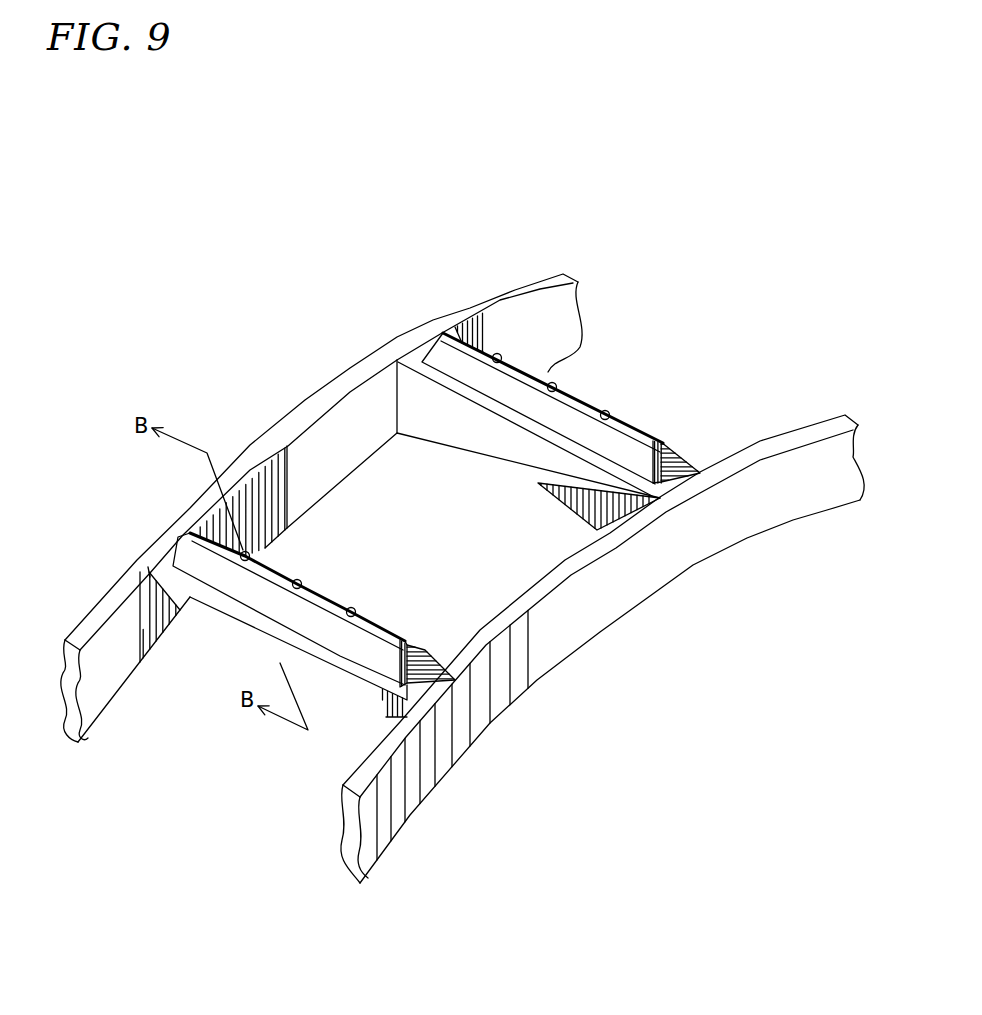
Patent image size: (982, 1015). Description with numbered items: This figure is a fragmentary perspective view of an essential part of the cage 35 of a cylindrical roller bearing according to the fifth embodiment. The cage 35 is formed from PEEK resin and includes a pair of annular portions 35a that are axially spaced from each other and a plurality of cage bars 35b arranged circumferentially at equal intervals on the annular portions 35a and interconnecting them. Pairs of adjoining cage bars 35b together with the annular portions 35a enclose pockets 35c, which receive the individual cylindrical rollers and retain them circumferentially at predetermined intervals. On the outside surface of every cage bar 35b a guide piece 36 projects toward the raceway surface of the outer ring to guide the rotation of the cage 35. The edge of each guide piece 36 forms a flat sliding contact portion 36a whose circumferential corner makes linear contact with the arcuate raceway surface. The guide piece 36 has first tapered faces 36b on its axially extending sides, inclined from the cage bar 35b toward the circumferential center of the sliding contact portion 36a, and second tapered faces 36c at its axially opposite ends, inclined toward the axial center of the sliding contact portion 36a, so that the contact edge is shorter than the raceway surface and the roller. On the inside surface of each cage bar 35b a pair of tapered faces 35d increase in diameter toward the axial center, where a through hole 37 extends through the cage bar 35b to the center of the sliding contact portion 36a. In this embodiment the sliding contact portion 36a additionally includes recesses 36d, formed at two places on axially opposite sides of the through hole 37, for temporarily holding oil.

The cage 35 is at (451, 578).
The annular portions 35a is at (347, 380).
The cage bars 35b is at (527, 470).
The pockets 35c is at (722, 374).
The tapered faces 35d is at (130, 585).
The guide piece 36 is at (421, 499).
The sliding contact portion 36a is at (577, 393).
The first tapered faces 36b is at (426, 338).
The second tapered faces 36c is at (683, 462).
The recess 36d is at (485, 317).
The through hole 37 is at (552, 386).